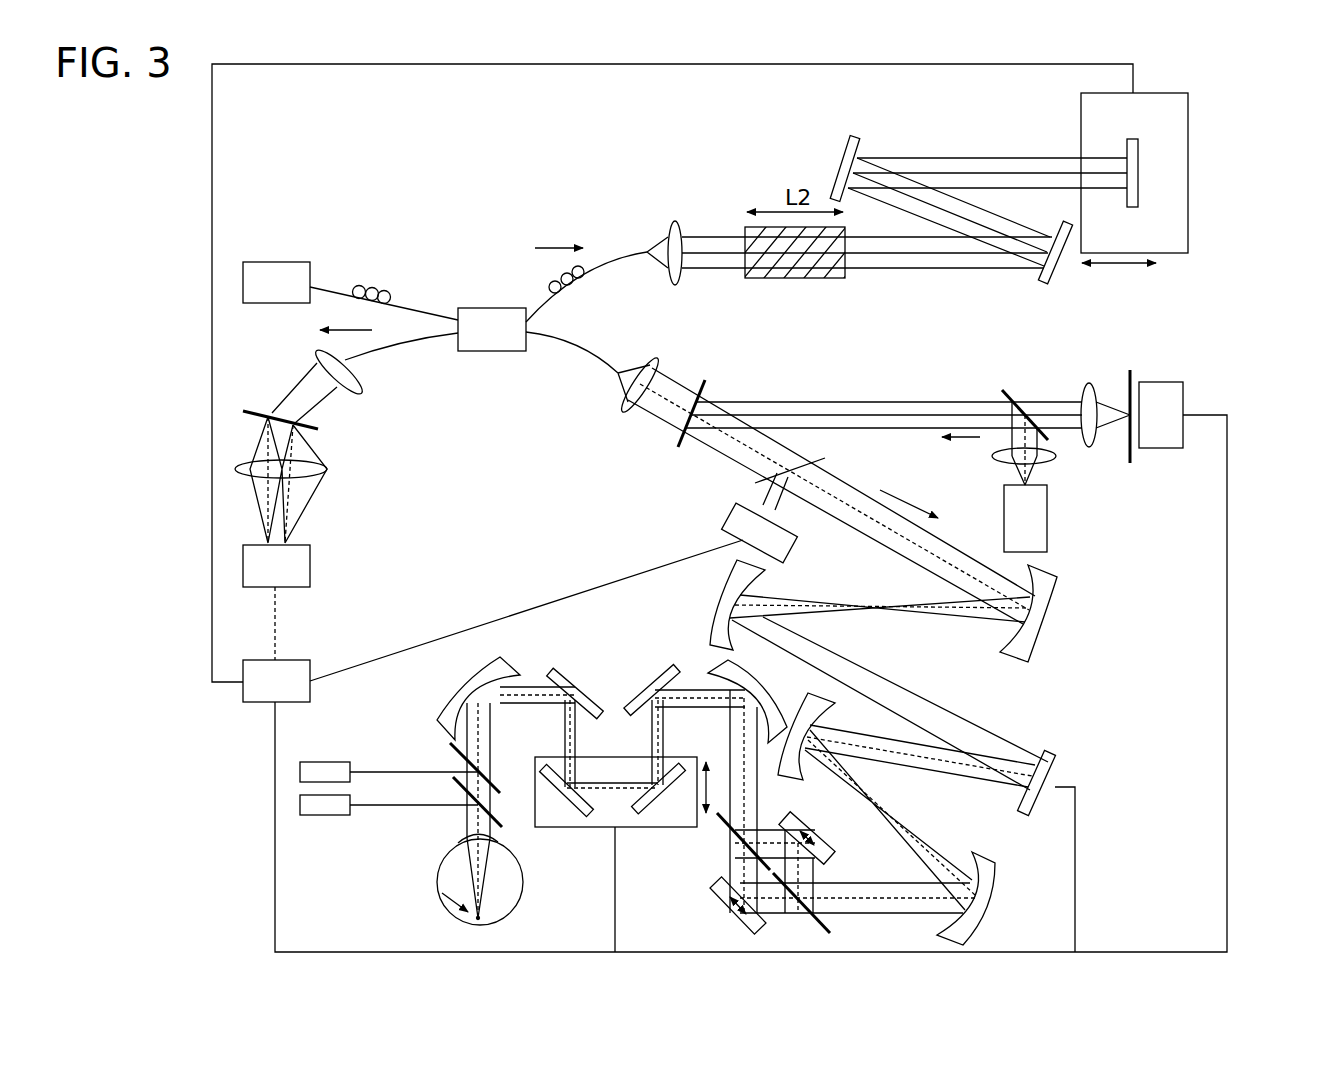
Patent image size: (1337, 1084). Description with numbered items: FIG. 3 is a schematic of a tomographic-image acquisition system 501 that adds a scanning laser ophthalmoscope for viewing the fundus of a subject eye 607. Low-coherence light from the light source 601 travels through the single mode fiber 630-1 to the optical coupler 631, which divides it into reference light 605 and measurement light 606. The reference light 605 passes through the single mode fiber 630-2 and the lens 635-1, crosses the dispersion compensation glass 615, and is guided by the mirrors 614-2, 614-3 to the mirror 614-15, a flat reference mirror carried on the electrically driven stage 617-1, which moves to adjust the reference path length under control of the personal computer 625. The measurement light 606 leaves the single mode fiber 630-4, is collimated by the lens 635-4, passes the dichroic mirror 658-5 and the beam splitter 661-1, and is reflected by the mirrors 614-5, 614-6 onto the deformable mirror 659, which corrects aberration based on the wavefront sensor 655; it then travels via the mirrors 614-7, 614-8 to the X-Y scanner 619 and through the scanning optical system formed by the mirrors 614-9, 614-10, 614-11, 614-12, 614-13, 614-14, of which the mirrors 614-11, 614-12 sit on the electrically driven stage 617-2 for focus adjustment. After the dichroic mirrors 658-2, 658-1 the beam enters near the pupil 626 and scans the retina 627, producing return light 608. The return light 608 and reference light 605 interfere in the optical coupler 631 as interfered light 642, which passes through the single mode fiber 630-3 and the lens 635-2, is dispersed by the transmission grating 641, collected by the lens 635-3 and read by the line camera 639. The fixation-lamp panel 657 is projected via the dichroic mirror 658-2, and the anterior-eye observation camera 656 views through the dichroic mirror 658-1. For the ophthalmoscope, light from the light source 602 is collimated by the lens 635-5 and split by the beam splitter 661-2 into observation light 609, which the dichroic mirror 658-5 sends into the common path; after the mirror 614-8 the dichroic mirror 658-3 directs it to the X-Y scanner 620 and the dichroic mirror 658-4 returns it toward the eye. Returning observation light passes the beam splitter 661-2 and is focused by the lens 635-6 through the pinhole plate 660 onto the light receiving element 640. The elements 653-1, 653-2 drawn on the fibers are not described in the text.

The tomographic-image acquisition system 501 is at (1245, 283).
The light source 601 is at (258, 262).
The light source 602 is at (1047, 530).
The reference light 605 is at (558, 234).
The measurement light 606 is at (912, 497).
The subject eye 607 is at (438, 875).
The return light 608 is at (442, 896).
The observation light 609 is at (964, 454).
The mirror 614-2 is at (1055, 284).
The mirror 614-3 is at (838, 150).
The mirror 614-5 is at (1045, 620).
The mirror 614-6 is at (710, 612).
The mirror 614-7 is at (792, 780).
The mirror 614-8 is at (985, 890).
The mirror 614-9 is at (785, 684).
The mirror 614-10 is at (638, 682).
The mirror 614-11 is at (658, 812).
The mirror 614-12 is at (562, 815).
The mirror 614-13 is at (582, 664).
The mirror 614-14 is at (460, 698).
The mirror 614-15 is at (1140, 200).
The dispersion compensation glass 615 is at (812, 279).
The electrically driven stage 617-1 is at (1188, 118).
The electrically driven stage 617-2 is at (612, 830).
The X-Y scanner 619 is at (718, 915).
The X-Y scanner 620 is at (836, 850).
The personal computer 625 is at (250, 702).
The pupil 626 is at (458, 843).
The retina 627 is at (478, 920).
The single mode fiber 630-1 is at (337, 292).
The single mode fiber 630-2 is at (605, 248).
The single mode fiber 630-3 is at (385, 345).
The single mode fiber 630-4 is at (578, 350).
The optical coupler 631 is at (468, 308).
The lens 635-1 is at (678, 283).
The lens 635-2 is at (362, 395).
The lens 635-3 is at (328, 467).
The lens 635-4 is at (622, 412).
The lens 635-5 is at (1048, 462).
The lens 635-6 is at (1086, 383).
The line camera 639 is at (310, 563).
The light receiving element 640 is at (1168, 382).
The transmission grating 641 is at (252, 411).
The interfered light 642 is at (346, 316).
The polarization controller 653-1 is at (388, 292).
The polarization controller 653-2 is at (553, 287).
The wavefront sensor 655 is at (726, 522).
The anterior-eye observation camera 656 is at (318, 815).
The fixation-lamp panel 657 is at (320, 762).
The dichroic mirror 658-1 is at (456, 783).
The dichroic mirror 658-2 is at (452, 748).
The dichroic mirror 658-3 is at (820, 925).
The dichroic mirror 658-4 is at (722, 825).
The dichroic mirror 658-5 is at (712, 383).
The deformable mirror 659 is at (1052, 755).
The pinhole plate 660 is at (1128, 370).
The beam splitter 661-1 is at (757, 482).
The beam splitter 661-2 is at (1008, 392).